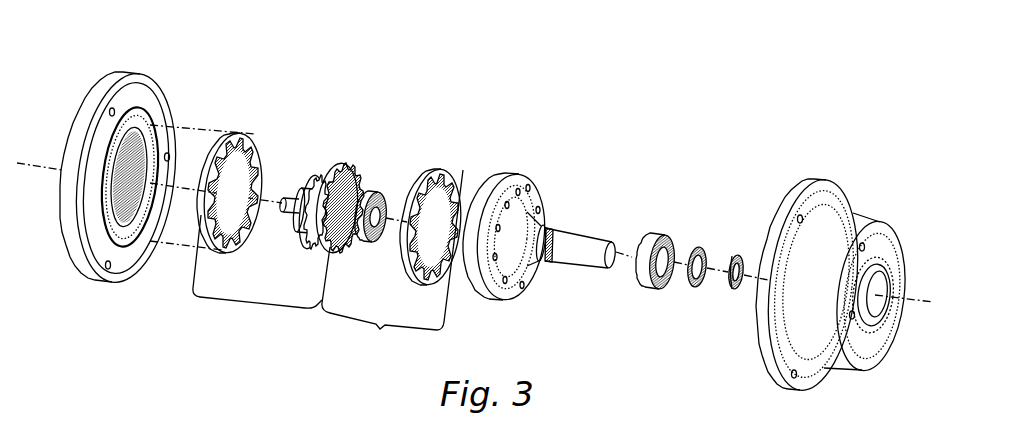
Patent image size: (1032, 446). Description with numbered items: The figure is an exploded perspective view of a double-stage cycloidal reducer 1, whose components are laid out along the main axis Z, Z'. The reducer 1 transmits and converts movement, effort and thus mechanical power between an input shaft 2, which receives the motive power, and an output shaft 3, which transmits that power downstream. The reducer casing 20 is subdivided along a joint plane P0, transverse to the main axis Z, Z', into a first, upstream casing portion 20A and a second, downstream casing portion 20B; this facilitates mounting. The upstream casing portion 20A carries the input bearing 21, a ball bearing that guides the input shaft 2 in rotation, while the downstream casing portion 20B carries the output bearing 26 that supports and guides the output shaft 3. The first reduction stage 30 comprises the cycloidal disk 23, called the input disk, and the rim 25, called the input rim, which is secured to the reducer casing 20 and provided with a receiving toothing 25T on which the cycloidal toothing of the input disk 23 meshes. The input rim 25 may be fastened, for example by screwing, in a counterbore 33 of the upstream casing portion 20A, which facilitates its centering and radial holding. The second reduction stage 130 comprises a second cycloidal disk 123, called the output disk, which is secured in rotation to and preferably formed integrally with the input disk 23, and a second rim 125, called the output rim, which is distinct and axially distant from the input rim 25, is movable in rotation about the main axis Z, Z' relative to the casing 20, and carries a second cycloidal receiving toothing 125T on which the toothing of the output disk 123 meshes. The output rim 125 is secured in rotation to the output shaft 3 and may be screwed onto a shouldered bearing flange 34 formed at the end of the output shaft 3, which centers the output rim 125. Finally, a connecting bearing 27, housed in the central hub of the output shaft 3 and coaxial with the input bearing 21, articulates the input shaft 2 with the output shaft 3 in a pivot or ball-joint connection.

The reducer 1 is at (604, 92).
The input shaft 2 is at (296, 196).
The output shaft 3 is at (580, 240).
The reducer casing 20 is at (124, 64).
The first casing portion 20A is at (114, 80).
The second casing portion 20B is at (828, 198).
The joint plane P0 is at (139, 84).
The input bearing 21 is at (301, 228).
The cycloidal disk 23 is at (322, 178).
The rim 25 is at (240, 134).
The receiving toothing 25T is at (248, 150).
The output bearing 26 is at (647, 293).
The connecting bearing 27 is at (370, 192).
The first reduction stage 30 is at (260, 196).
The counterbore 33 is at (146, 144).
The bearing flange 34 is at (489, 300).
The second cycloidal disk 123 is at (348, 166).
The second rim 125 is at (433, 162).
The second cycloidal receiving toothing 125T is at (456, 172).
The second reduction stage 130 is at (425, 216).
The main axis Z is at (39, 154).
The main axis Z' is at (904, 287).